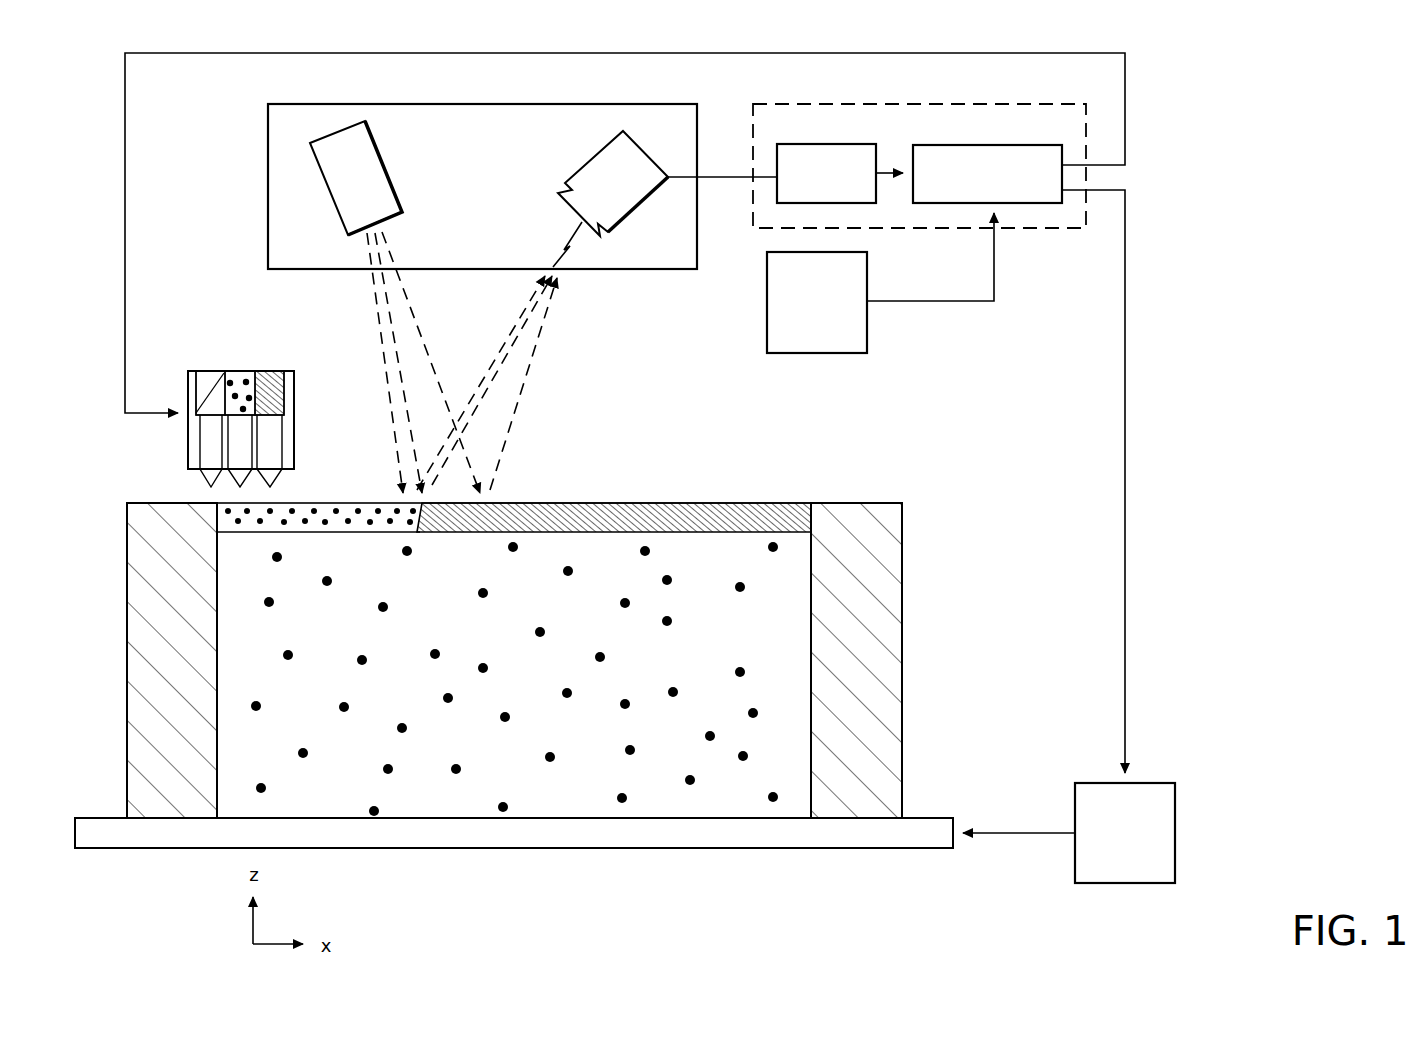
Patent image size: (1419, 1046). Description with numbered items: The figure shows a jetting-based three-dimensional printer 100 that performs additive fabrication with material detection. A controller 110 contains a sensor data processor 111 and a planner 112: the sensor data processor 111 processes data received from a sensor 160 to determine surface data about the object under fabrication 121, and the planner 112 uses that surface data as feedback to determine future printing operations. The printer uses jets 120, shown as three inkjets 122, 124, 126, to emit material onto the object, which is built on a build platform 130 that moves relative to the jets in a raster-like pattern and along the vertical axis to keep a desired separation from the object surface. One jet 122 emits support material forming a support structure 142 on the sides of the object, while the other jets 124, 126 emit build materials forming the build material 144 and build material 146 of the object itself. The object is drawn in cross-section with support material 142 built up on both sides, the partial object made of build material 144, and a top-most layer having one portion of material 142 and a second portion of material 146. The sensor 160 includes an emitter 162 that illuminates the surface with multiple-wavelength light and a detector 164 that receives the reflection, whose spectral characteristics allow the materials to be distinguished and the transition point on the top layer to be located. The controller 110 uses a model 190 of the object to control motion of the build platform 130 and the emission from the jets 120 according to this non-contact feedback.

The jetting-based 3D printer 100 is at (975, 922).
The controller 110 is at (921, 135).
The sensor data processor 111 is at (848, 184).
The planner 112 is at (1010, 184).
The jets 120 is at (226, 409).
The object under fabrication 121 is at (491, 650).
The jet 122 is at (207, 380).
The jet 124 is at (238, 382).
The jet 126 is at (284, 396).
The build platform 130 is at (166, 847).
The support material 142 is at (196, 671).
The build material 144 is at (538, 671).
The build material 146 is at (683, 502).
The sensor 160 is at (496, 166).
The emitter 162 is at (379, 190).
The detector 164 is at (635, 190).
The model 190 is at (839, 310).